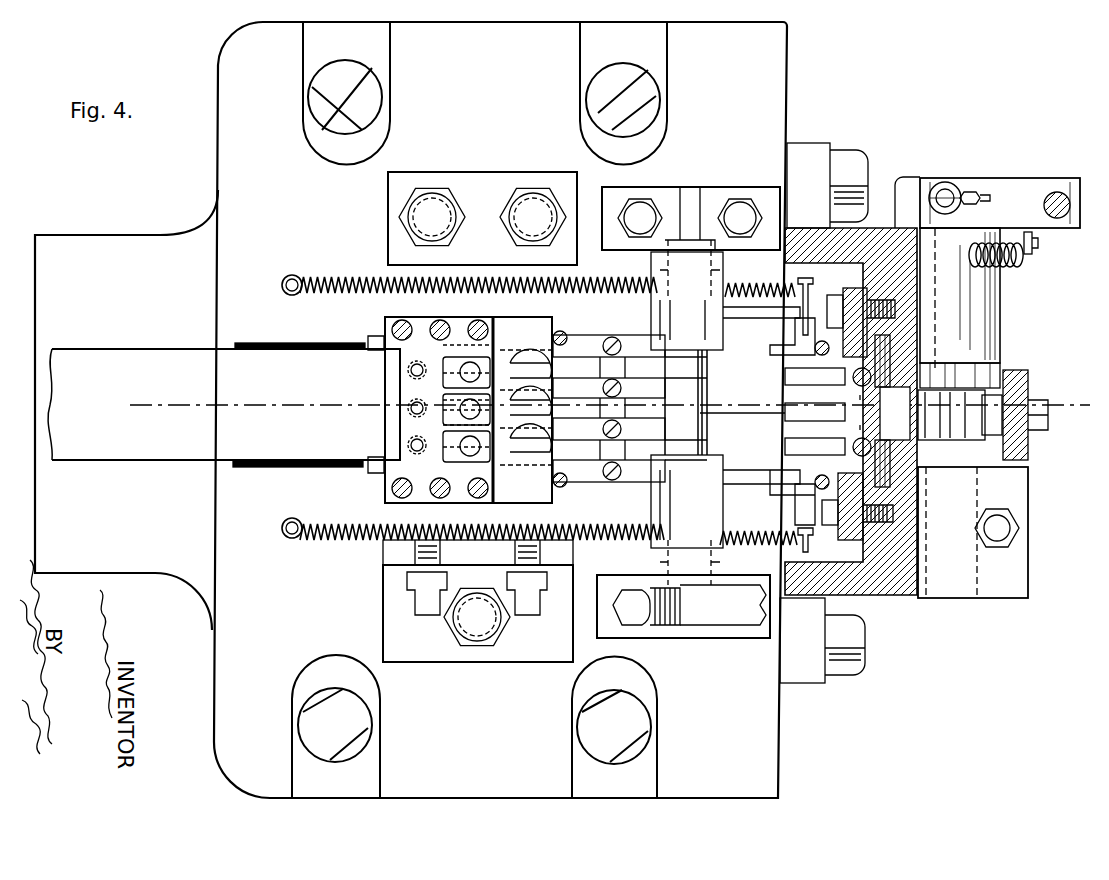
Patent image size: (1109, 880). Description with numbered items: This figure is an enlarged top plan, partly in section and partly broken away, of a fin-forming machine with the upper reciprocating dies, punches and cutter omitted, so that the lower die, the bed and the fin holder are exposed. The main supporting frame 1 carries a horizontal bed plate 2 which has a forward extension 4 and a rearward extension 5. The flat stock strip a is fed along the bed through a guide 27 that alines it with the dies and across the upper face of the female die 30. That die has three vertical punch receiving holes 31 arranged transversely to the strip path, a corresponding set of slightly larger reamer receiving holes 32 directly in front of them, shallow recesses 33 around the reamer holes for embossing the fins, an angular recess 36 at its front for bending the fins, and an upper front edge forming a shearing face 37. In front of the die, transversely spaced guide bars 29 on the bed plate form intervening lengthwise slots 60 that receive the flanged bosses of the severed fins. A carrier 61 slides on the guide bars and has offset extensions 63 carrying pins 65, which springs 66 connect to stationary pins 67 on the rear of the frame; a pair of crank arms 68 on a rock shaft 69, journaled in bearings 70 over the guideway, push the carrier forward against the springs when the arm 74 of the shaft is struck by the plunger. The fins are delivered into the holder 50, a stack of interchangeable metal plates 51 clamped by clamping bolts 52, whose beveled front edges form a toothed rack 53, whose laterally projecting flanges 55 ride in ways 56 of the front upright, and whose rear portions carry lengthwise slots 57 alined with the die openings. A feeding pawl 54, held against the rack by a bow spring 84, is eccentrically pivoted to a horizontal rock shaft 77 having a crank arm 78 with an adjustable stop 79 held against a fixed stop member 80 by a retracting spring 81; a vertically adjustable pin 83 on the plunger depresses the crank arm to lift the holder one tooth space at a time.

The main supporting frame 1 is at (380, 556).
The horizontal bed plate 2 is at (210, 598).
The forward extension 4 is at (932, 578).
The rearward extension 5 is at (604, 410).
The stock strip a is at (164, 448).
The guide 27 is at (280, 338).
The guide bars 29 is at (580, 388).
The female die 30 is at (374, 470).
The punch receiving holes 31 is at (408, 440).
The reamer receiving holes 32 is at (466, 372).
The shallow recesses 33 is at (458, 358).
The angular recess 36 is at (510, 360).
The shearing face 37 is at (540, 447).
The fin holder 50 is at (880, 412).
The metal plates 51 is at (870, 432).
The clamping bolts 52 is at (852, 377).
The toothed rack 53 is at (892, 363).
The feeding pawl 54 is at (925, 392).
The laterally projecting flanges 55 is at (892, 352).
The ways 56 is at (868, 335).
The lengthwise slots 57 is at (812, 386).
The lengthwise slots 60 is at (686, 408).
The carrier 61 is at (758, 411).
The offset extensions 63 is at (795, 332).
The pins 65 is at (812, 300).
The springs 66 is at (338, 278).
The stationary pins 67 is at (292, 276).
The crank arms 68 is at (745, 310).
The rock shaft 69 is at (720, 425).
The bearings 70 is at (690, 412).
The arm 74 is at (760, 606).
The horizontal rock shaft 77 is at (950, 182).
The crank arm 78 is at (1025, 182).
The adjustable stop 79 is at (976, 192).
The fixed stop member 80 is at (908, 185).
The retracting spring 81 is at (1018, 254).
The vertically adjustable pin 83 is at (1059, 192).
The bow spring 84 is at (1030, 378).